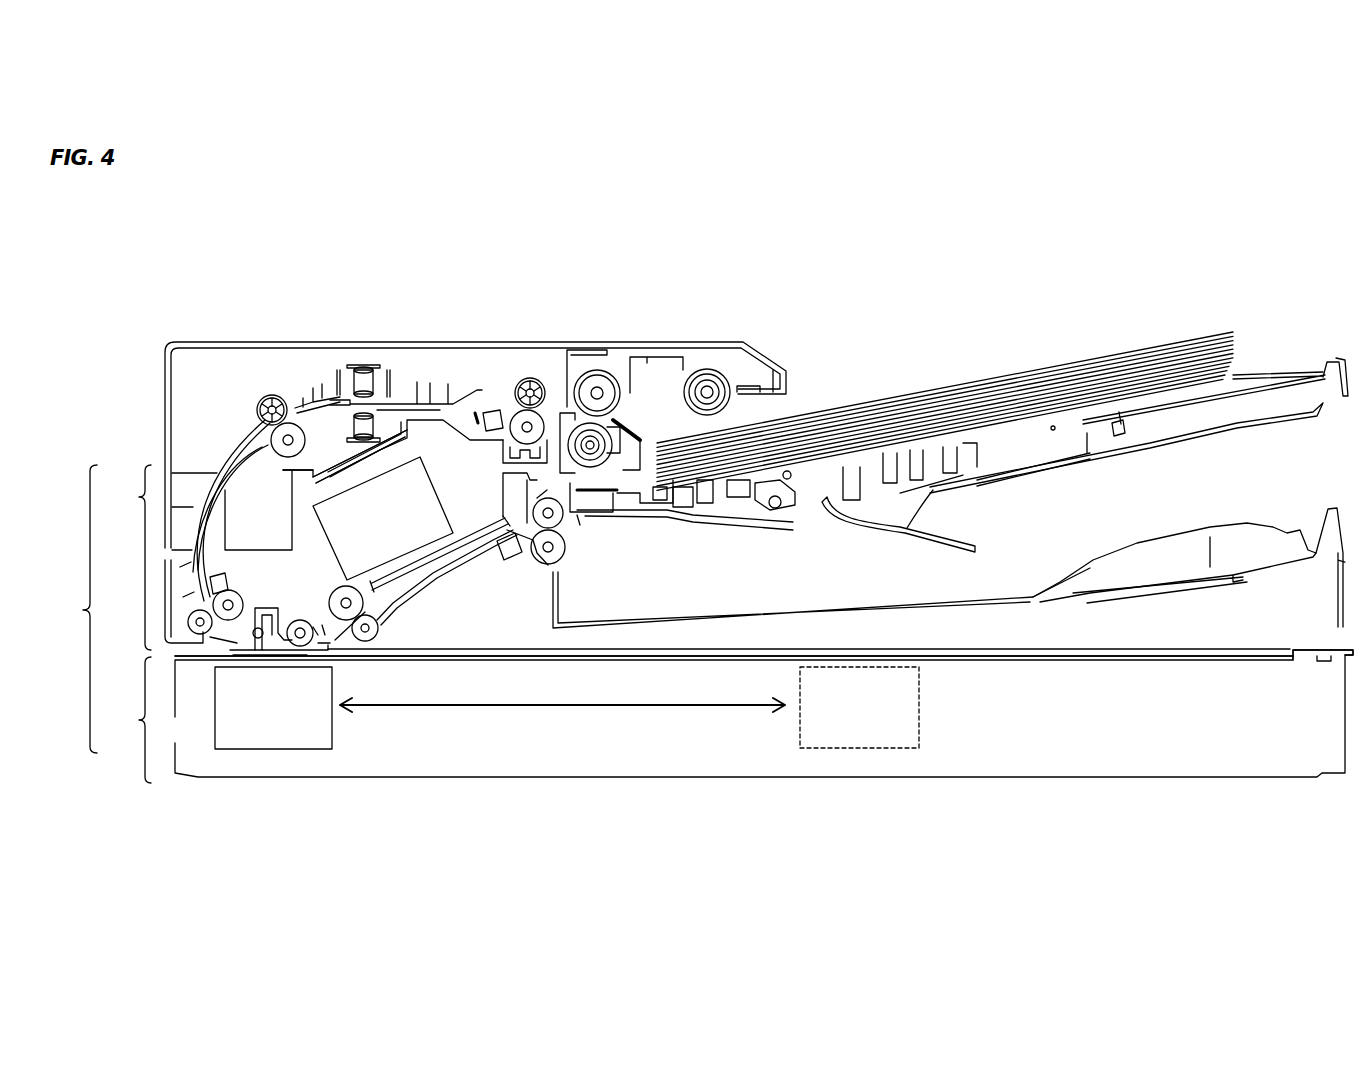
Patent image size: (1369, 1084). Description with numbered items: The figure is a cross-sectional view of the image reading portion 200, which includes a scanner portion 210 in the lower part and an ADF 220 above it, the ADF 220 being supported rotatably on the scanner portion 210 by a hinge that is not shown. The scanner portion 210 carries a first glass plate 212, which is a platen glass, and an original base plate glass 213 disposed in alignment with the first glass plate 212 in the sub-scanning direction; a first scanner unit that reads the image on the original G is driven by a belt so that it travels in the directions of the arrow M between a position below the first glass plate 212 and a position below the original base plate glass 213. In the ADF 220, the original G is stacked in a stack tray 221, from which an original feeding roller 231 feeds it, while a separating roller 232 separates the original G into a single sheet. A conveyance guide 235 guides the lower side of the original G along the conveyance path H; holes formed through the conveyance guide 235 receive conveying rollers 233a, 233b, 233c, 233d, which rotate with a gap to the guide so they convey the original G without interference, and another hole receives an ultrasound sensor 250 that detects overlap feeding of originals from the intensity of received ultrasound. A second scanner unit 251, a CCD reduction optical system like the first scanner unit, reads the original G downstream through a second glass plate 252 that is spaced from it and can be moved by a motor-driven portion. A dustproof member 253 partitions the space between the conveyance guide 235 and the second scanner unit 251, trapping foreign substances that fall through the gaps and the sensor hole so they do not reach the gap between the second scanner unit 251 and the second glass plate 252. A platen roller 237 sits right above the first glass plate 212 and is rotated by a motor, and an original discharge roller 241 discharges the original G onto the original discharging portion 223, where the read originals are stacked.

The image reading portion 200 is at (699, 559).
The scanner portion 210 is at (724, 716).
The first glass plate 212 is at (280, 660).
The original base plate glass 213 is at (1097, 655).
The ADF 220 is at (694, 499).
The stack tray 221 is at (1278, 402).
The original discharging portion 223 is at (1128, 553).
The original feeding roller 231 is at (703, 368).
The separating roller 232 is at (607, 370).
The conveying roller 233a is at (530, 377).
The conveying roller 233b is at (270, 390).
The conveying roller 233c is at (190, 634).
The conveying roller 233d is at (383, 630).
The conveyance guide 235 is at (483, 413).
The platen roller 237 is at (303, 613).
The original discharge roller 241 is at (563, 560).
The ultrasound sensor 250 is at (380, 372).
The second scanner unit 251 is at (405, 472).
The second glass plate 252 is at (423, 570).
The dustproof member 253 is at (338, 463).
The original G is at (927, 387).
The conveyance path H is at (223, 462).
The arrow M is at (562, 716).